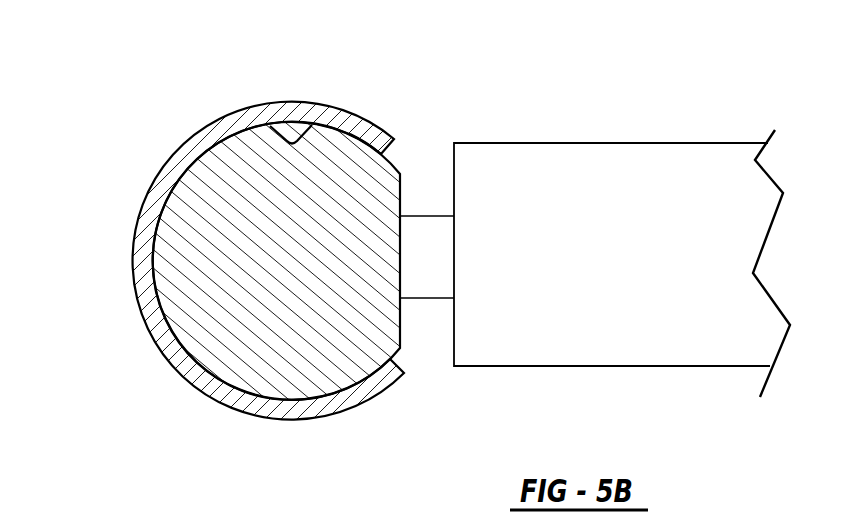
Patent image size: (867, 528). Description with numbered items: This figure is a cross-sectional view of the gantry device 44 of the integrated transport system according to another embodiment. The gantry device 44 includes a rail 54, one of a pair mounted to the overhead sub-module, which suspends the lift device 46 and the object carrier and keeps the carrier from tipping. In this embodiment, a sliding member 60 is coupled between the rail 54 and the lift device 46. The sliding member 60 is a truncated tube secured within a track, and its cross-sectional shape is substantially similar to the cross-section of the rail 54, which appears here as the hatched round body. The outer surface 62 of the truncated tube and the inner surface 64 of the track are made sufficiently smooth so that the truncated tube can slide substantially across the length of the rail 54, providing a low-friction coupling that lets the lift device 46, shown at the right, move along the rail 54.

The gantry device 44 is at (140, 195).
The rail 54 is at (197, 132).
The sliding member 60 is at (397, 165).
The outer surface of the truncated tube 62 is at (336, 128).
The inner surface of the track 64 is at (289, 142).
The lift device 46 is at (637, 143).